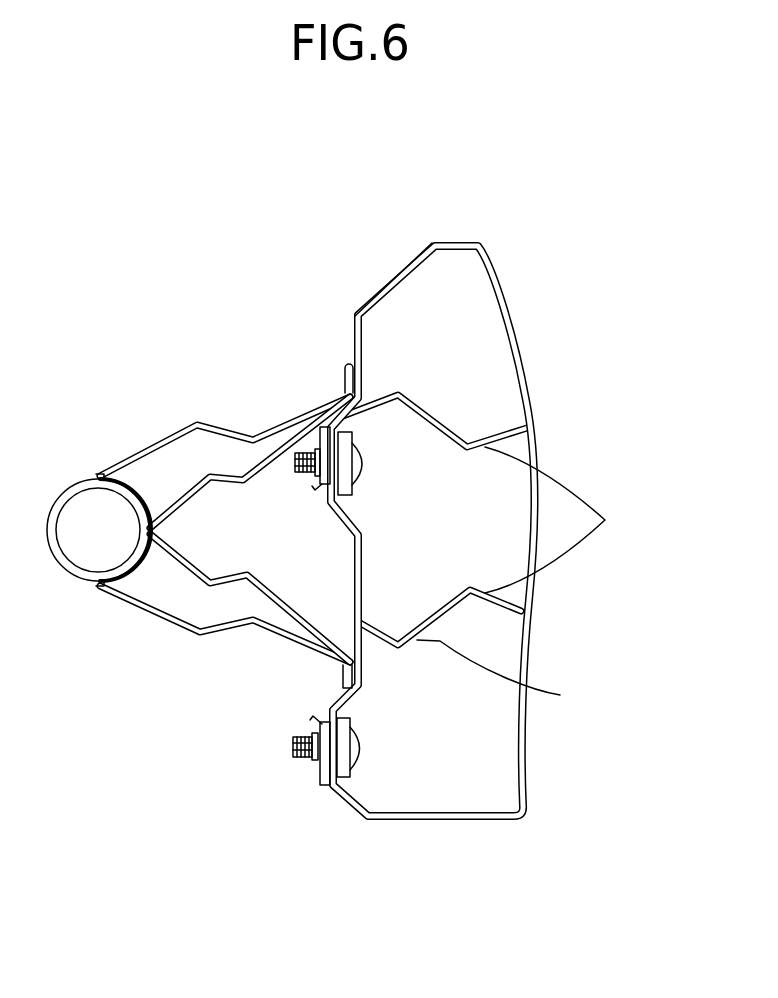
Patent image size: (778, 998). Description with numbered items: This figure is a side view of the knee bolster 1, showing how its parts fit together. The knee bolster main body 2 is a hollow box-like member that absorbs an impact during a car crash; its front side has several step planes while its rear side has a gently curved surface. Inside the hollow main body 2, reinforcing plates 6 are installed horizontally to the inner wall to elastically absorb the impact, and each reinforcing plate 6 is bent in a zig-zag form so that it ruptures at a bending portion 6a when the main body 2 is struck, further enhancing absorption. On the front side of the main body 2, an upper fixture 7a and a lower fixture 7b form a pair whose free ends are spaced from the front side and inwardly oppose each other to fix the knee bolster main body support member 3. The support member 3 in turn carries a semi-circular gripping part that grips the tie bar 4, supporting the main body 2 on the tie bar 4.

The knee bolster 1 is at (510, 249).
The knee bolster main body 2 is at (398, 272).
The knee bolster main body support member 3 is at (150, 450).
The tie bar 4 is at (72, 480).
The reinforcing plate 6 is at (487, 440).
The bending portion 6a is at (532, 580).
The upper fixture 7a is at (346, 372).
The lower fixture 7b is at (346, 666).